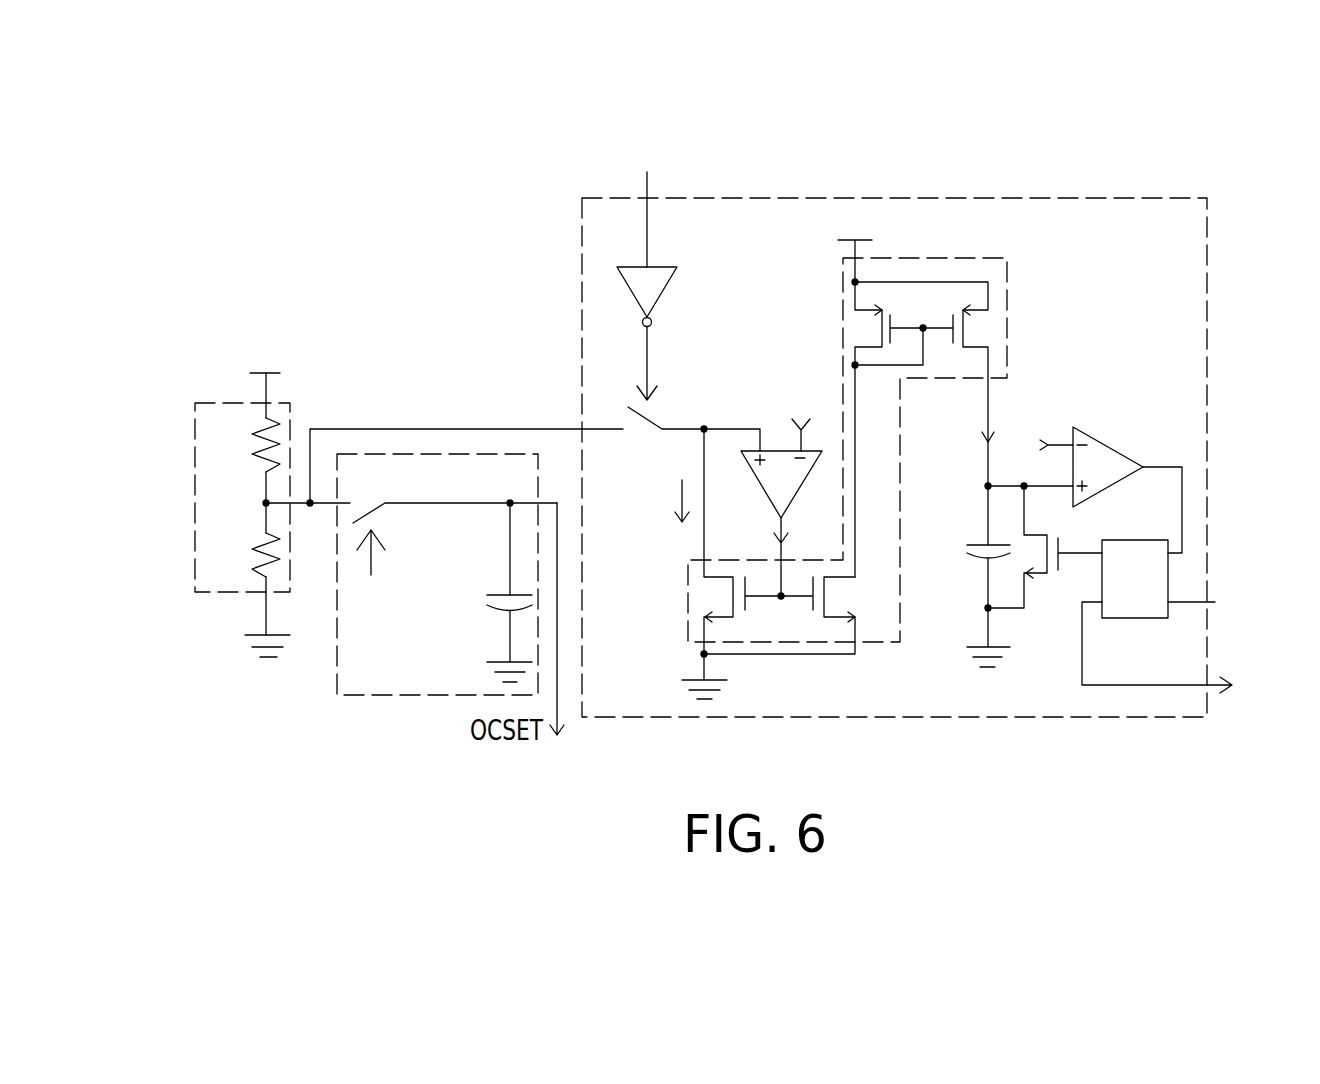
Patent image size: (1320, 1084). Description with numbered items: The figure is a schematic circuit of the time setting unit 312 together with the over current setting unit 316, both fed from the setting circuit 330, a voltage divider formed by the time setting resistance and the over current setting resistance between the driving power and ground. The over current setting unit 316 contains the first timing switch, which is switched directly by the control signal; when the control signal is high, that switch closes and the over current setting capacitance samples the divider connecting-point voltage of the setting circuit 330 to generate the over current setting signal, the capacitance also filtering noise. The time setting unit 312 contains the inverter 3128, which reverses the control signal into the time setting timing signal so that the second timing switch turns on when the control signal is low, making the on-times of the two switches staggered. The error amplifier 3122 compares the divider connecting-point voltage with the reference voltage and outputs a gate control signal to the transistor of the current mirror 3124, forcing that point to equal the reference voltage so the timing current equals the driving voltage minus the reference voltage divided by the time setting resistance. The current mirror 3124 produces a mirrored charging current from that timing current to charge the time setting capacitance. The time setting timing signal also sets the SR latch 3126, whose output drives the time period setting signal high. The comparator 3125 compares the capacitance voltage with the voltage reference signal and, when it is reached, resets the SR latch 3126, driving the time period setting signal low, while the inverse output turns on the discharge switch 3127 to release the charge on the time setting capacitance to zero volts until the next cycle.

The setting circuit 330 is at (248, 407).
The over current setting unit 316 is at (342, 660).
The time setting unit 312 is at (585, 248).
The inverter 3128 is at (662, 280).
The error amplifier 3122 is at (768, 493).
The current mirror 3124 is at (1003, 273).
The comparator 3125 is at (1113, 418).
The SR latch 3126 is at (1130, 610).
The discharge switch 3127 is at (1033, 572).